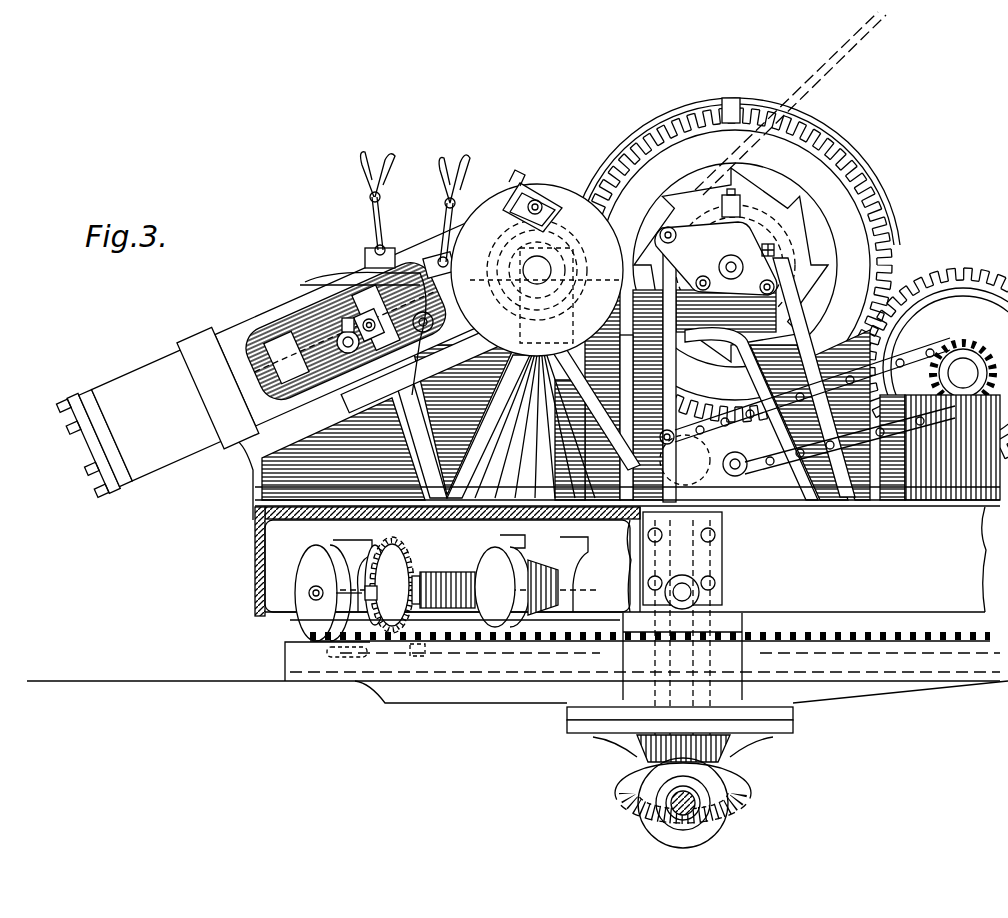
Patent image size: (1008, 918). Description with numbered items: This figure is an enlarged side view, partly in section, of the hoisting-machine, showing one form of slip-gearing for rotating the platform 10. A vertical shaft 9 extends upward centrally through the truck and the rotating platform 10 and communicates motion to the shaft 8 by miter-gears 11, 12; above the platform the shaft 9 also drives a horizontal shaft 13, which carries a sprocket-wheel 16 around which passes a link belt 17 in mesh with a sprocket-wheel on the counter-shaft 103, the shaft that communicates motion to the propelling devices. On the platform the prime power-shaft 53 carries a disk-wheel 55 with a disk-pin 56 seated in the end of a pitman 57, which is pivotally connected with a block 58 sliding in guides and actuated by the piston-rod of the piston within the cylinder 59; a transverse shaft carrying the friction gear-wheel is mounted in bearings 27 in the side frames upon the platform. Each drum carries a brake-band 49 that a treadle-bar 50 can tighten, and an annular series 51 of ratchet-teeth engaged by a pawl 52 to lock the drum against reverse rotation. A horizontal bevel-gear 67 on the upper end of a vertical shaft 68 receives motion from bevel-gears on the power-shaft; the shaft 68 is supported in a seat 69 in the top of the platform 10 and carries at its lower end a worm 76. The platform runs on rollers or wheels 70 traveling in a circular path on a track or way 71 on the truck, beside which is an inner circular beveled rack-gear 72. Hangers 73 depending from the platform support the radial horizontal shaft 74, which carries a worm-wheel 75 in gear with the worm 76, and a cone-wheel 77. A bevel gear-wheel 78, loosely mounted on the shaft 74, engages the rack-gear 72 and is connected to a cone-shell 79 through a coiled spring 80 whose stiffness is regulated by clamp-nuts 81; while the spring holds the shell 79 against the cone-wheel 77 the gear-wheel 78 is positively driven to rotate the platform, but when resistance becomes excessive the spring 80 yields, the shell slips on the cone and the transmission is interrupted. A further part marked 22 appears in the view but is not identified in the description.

The shaft 8 is at (690, 806).
The vertical shaft 9 is at (677, 715).
The rotating platform 10 is at (625, 559).
The miter-gear 11 is at (727, 745).
The miter-gear 12 is at (740, 780).
The horizontal shaft 13 is at (708, 492).
The sprocket-wheel 16 is at (788, 506).
The link belt 17 is at (895, 488).
The lever 22 is at (385, 300).
The bearings 27 is at (752, 256).
The brake-band 49 is at (808, 133).
The treadle-bar 50 is at (434, 449).
The annular series of ratchet-teeth 51 is at (745, 182).
The pawl 52 is at (641, 224).
The prime power-shaft 53 is at (540, 268).
The disk-wheel 55 is at (537, 270).
The disk-pin 56 is at (536, 200).
The pitman 57 is at (485, 245).
The block 58 is at (333, 330).
The cylinder 59 is at (140, 422).
The horizontal bevel-gear 67 is at (568, 377).
The vertical shaft 68 is at (463, 420).
The seat 69 is at (447, 565).
The rollers or wheels 70 is at (307, 621).
The track or way 71 is at (298, 660).
The inner circular rack-gear 72 is at (972, 641).
The hangers 73 is at (333, 541).
The horizontal shaft 74 is at (308, 594).
The worm-wheel 75 is at (513, 540).
The worm 76 is at (556, 578).
The cone-wheel 77 is at (480, 541).
The bevel gear-wheel 78 is at (412, 545).
The cone-shell 79 is at (502, 587).
The coiled spring 80 is at (458, 572).
The clamp-nuts 81 is at (418, 575).
The counter-shaft 103 is at (963, 373).